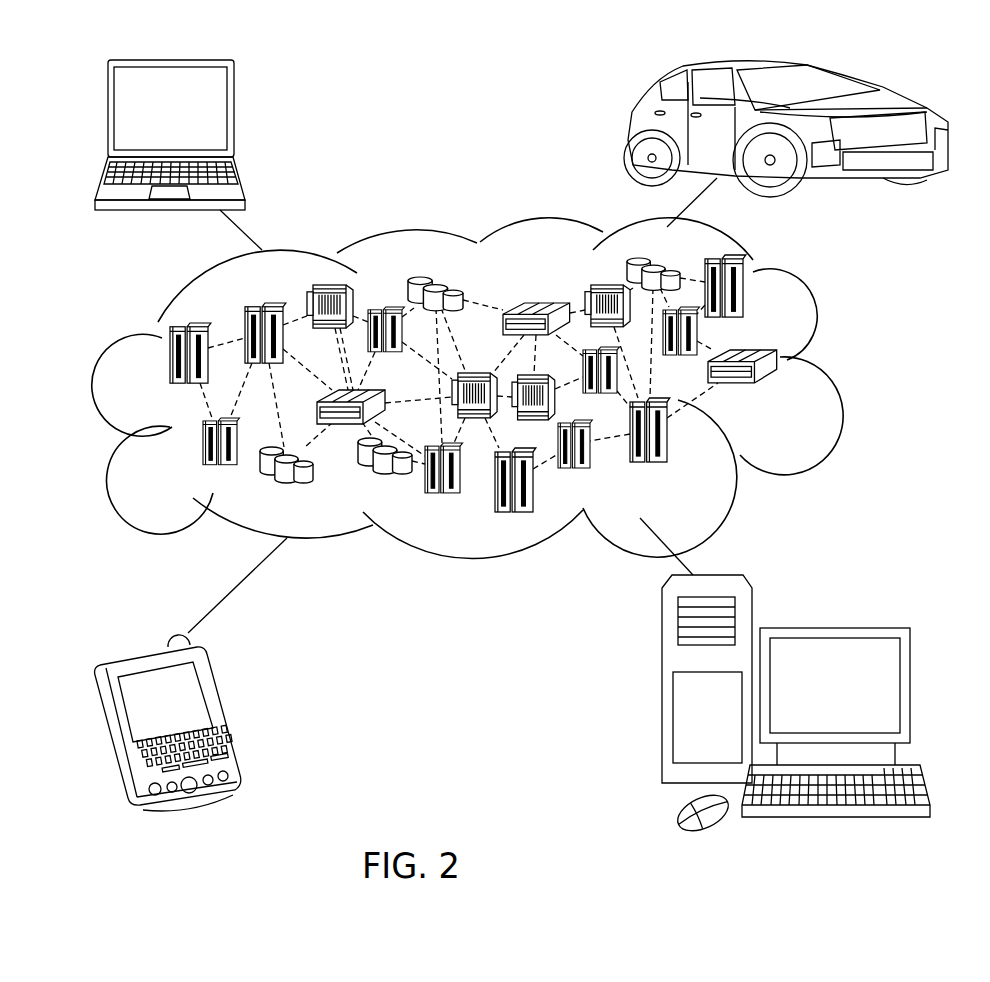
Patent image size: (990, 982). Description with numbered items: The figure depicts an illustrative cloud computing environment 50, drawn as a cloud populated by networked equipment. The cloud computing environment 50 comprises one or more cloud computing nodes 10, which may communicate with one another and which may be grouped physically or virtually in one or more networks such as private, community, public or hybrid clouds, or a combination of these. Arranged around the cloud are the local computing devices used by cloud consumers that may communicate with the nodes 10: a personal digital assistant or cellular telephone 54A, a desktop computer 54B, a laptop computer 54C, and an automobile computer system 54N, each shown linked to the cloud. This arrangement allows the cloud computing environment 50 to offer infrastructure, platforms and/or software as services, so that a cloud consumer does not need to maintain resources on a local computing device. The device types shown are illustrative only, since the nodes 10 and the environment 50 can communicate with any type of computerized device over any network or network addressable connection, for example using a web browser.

The cloud computing node 10 is at (773, 403).
The cloud computing environment 50 is at (835, 363).
The personal digital assistant or cellular telephone 54A is at (225, 712).
The desktop computer 54B is at (832, 627).
The laptop computer 54C is at (233, 115).
The automobile computer system 54N is at (634, 128).